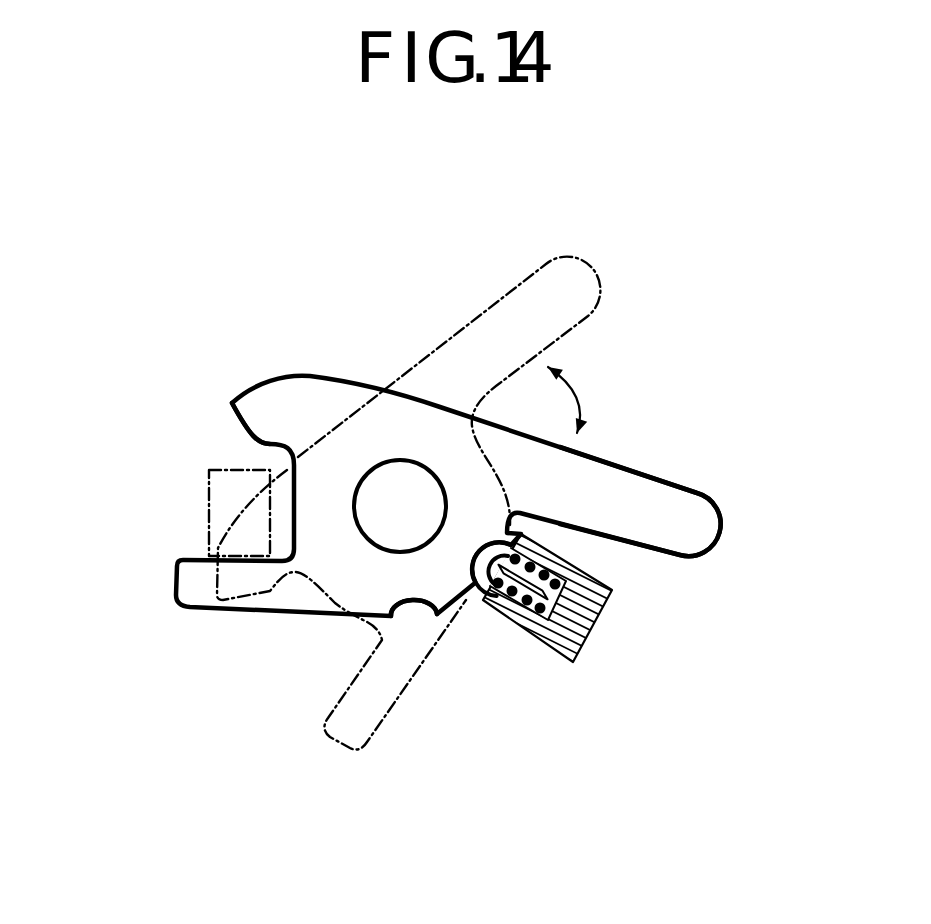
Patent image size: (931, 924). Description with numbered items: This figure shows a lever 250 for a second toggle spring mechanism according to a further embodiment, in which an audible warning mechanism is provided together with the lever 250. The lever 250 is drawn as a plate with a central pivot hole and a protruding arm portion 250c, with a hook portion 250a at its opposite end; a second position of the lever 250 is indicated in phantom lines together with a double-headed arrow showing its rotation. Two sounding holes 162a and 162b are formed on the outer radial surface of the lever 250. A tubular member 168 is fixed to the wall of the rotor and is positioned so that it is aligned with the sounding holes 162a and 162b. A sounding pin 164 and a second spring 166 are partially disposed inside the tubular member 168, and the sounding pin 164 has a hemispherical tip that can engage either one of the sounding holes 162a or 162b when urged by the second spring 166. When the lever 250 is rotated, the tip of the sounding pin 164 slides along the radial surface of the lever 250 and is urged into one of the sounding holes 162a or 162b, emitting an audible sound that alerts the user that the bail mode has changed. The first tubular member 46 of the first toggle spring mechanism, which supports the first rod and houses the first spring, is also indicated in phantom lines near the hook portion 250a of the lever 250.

The lever 250 is at (445, 398).
The hook portion of lever 250a is at (245, 432).
The arm portion of lever 250c is at (632, 500).
The first tubular member 46 is at (207, 507).
The sounding pin 164 is at (605, 590).
The second spring 166 is at (510, 623).
The tubular member 168 is at (600, 580).
The sounding hole 162a is at (420, 601).
The sounding hole 162b is at (487, 608).